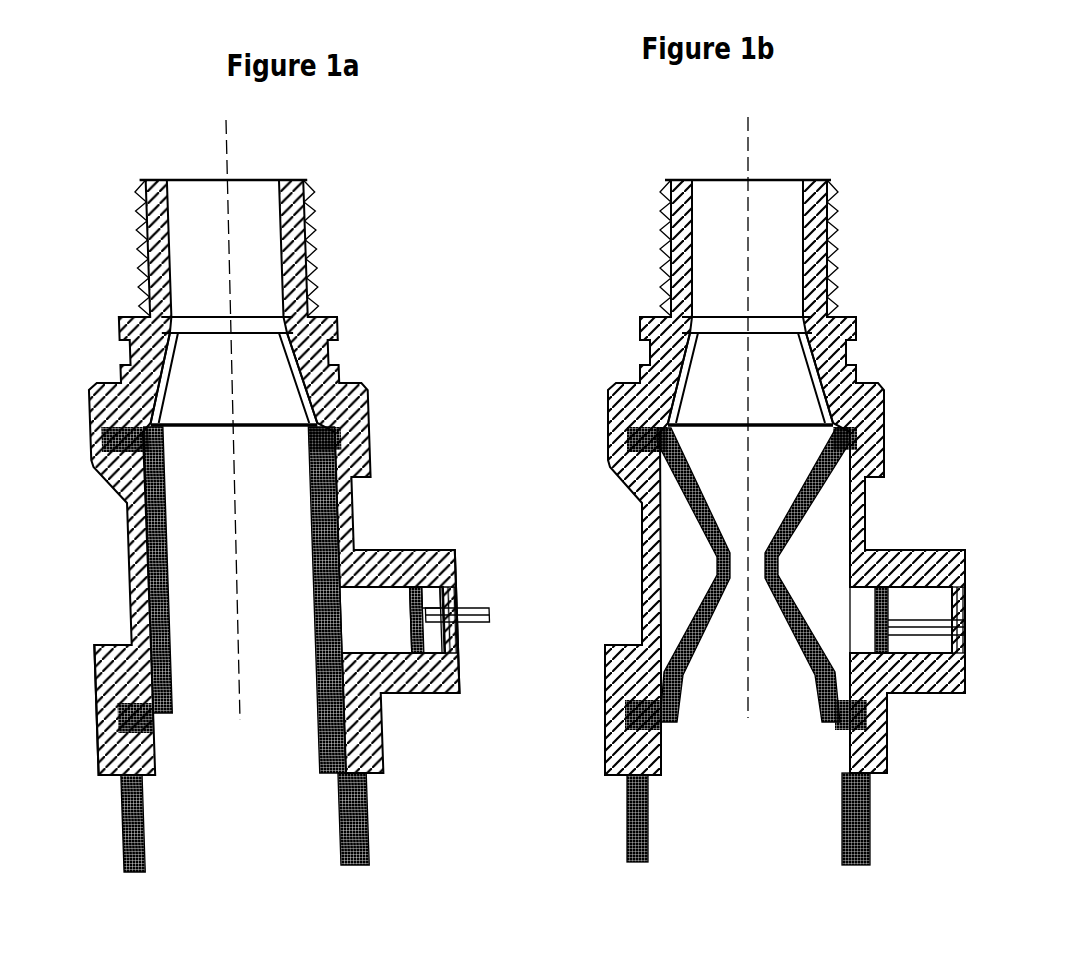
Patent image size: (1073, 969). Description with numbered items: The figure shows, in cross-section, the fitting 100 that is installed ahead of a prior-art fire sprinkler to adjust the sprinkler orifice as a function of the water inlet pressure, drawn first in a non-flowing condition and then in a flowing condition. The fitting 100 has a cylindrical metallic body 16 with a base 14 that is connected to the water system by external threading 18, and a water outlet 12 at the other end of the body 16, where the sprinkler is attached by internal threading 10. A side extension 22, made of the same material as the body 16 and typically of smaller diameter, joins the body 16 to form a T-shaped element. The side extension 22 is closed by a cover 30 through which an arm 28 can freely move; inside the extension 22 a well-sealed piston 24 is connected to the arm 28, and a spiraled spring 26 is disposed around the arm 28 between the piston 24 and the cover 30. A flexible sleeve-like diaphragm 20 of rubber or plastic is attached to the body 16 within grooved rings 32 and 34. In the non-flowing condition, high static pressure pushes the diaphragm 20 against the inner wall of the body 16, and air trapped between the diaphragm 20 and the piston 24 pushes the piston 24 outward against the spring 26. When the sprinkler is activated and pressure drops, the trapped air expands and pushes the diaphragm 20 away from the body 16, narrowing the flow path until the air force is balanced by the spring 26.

In FIG. 1A, the fitting 100 is at (413, 227).
In FIG. 1B, the fitting 100 is at (905, 167).
In FIG. 1A, the internal threading 10 is at (145, 833).
In FIG. 1B, the internal threading 10 is at (648, 823).
In FIG. 1A, the water outlet 12 is at (298, 827).
In FIG. 1B, the water outlet 12 is at (790, 823).
In FIG. 1A, the base 14 is at (313, 260).
In FIG. 1B, the base 14 is at (833, 258).
In FIG. 1A, the cylindrical metallic body 16 is at (128, 560).
In FIG. 1B, the cylindrical metallic body 16 is at (642, 548).
In FIG. 1A, the external threading 18 is at (310, 222).
In FIG. 1B, the external threading 18 is at (663, 207).
In FIG. 1A, the flexible sleeve-like diaphragm 20 is at (165, 517).
In FIG. 1B, the flexible sleeve-like diaphragm 20 is at (710, 620).
In FIG. 1A, the side extension 22 is at (387, 547).
In FIG. 1B, the side extension 22 is at (917, 547).
In FIG. 1A, the piston 24 is at (407, 620).
In FIG. 1B, the piston 24 is at (875, 625).
In FIG. 1A, the spiraled spring 26 is at (443, 595).
In FIG. 1B, the spiraled spring 26 is at (963, 653).
In FIG. 1A, the arm 28 is at (472, 657).
In FIG. 1B, the arm 28 is at (967, 620).
In FIG. 1A, the cover 30 is at (457, 648).
In FIG. 1B, the cover 30 is at (967, 592).
In FIG. 1A, the grooved ring 32 is at (95, 430).
In FIG. 1B, the grooved ring 32 is at (607, 428).
In FIG. 1A, the grooved ring 34 is at (98, 730).
In FIG. 1B, the grooved ring 34 is at (612, 730).